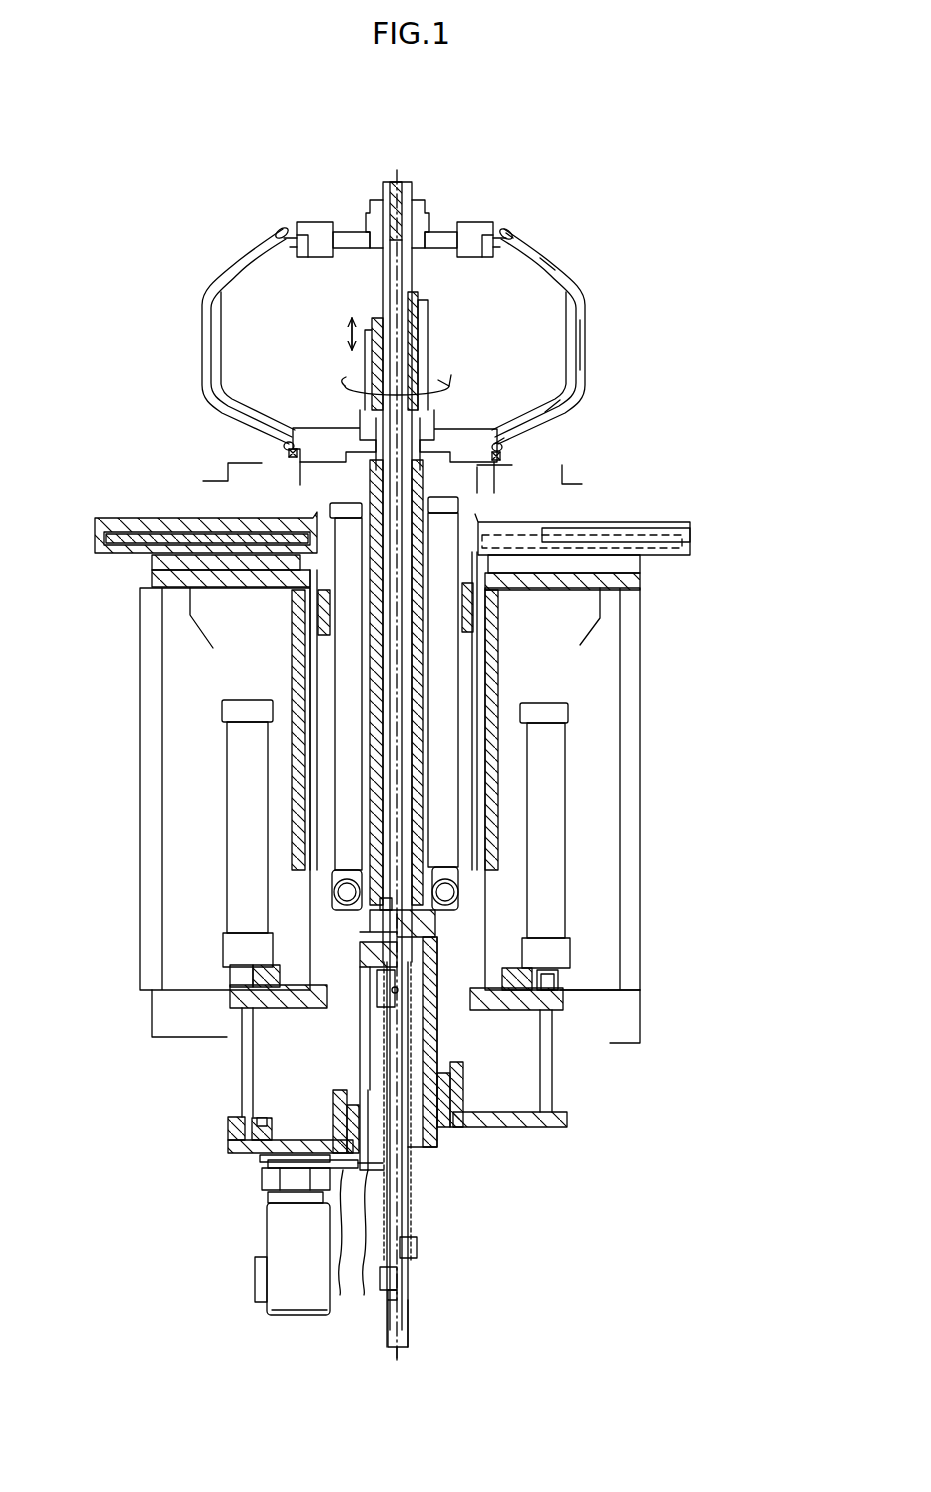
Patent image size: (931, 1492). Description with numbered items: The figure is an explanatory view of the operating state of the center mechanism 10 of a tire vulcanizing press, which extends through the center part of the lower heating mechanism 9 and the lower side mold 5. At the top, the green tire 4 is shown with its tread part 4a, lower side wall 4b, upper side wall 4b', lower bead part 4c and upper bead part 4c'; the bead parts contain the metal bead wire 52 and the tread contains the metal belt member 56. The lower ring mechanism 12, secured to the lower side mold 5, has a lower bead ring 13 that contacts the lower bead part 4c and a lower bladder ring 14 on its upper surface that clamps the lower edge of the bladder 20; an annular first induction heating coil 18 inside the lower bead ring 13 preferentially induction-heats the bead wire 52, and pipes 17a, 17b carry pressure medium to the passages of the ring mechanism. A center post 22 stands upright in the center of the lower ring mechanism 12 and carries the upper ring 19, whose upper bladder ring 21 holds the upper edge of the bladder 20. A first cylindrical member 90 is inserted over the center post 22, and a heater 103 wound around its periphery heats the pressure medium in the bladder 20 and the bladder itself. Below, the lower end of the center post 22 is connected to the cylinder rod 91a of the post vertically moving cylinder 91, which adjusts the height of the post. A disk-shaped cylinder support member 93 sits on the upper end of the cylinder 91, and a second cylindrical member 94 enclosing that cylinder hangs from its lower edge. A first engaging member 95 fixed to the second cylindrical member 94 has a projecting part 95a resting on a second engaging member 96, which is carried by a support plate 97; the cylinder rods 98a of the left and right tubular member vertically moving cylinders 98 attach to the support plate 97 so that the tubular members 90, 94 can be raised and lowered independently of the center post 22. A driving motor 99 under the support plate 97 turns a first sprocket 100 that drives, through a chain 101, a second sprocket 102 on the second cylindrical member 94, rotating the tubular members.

The green tire 4 is at (577, 282).
The tread part 4a is at (590, 343).
The lower side wall 4b is at (591, 416).
The upper side wall 4b' is at (573, 246).
The lower bead part 4c is at (554, 455).
The upper bead part 4c' is at (557, 216).
The lower side mold 5 is at (225, 468).
The lower heating mechanism 9 is at (698, 543).
The center mechanism 10 is at (600, 770).
The lower ring mechanism 12 is at (283, 412).
The lower bead ring 13 is at (310, 458).
The lower bladder ring 14 is at (326, 428).
The pipes 17a is at (345, 675).
The housing 17b is at (450, 690).
The first induction heating coil 18 is at (288, 458).
The upper ring 19 is at (490, 214).
The bladder 20 is at (588, 306).
The upper bladder ring 21 is at (433, 232).
The center post 22 is at (390, 745).
The bead wire 52 is at (278, 231).
The belt member 56 is at (208, 316).
The first cylindrical member 90 is at (370, 642).
The post vertically moving cylinder 91 is at (412, 1205).
The cylinder rod 91a is at (370, 918).
The cylinder support member 93 is at (355, 975).
The second cylindrical member 94 is at (360, 1050).
The first engaging member 95 is at (435, 1130).
The projecting part 95a is at (445, 1090).
The second engaging member 96 is at (335, 1115).
The support plate 97 is at (228, 1142).
The tubular member vertically moving cylinder 98 is at (237, 835).
The cylinder rod 98a is at (240, 985).
The driving motor 99 is at (278, 1268).
The first sprocket 100 is at (258, 1178).
The chain 101 is at (360, 1232).
The second sprocket 102 is at (376, 1297).
The heater 103 is at (416, 395).